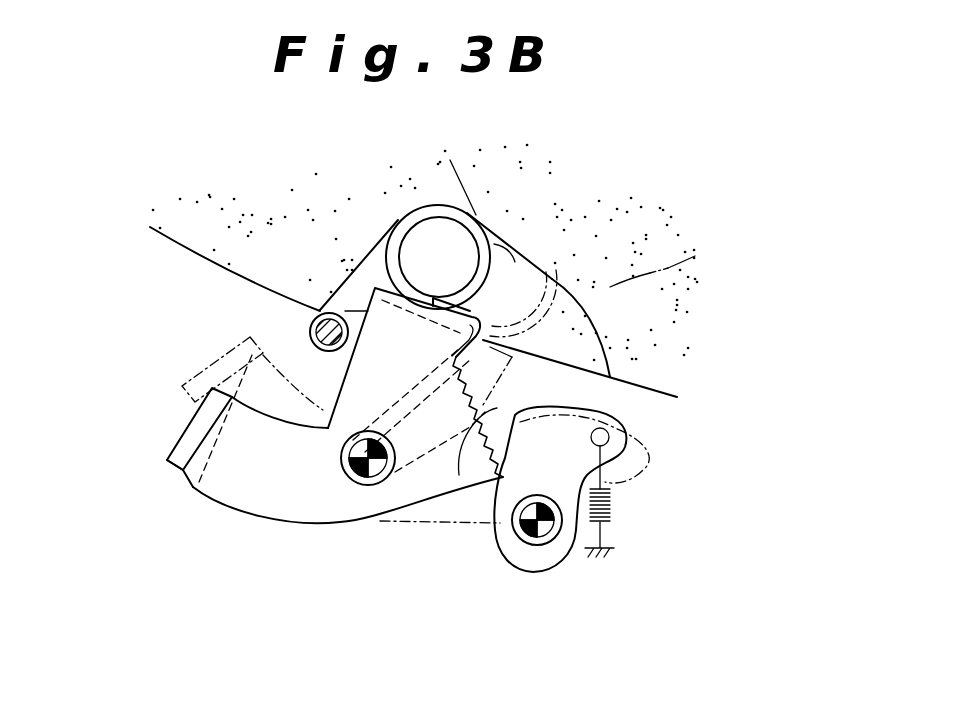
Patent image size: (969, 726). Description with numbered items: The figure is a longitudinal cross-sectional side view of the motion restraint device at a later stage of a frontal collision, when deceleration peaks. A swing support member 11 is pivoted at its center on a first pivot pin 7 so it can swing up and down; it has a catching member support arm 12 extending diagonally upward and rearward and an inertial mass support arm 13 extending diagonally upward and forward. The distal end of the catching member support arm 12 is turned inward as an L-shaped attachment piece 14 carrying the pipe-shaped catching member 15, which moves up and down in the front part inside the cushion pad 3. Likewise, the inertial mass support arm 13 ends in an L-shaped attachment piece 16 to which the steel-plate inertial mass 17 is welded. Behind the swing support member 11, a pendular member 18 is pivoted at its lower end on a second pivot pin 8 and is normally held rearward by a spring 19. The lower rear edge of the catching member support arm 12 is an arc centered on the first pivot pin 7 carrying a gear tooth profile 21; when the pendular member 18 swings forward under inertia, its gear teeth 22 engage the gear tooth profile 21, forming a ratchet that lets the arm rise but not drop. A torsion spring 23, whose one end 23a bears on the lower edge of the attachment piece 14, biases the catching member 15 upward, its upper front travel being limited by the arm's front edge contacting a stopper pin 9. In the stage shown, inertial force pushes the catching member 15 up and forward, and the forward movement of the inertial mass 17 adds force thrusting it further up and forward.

The cushion pad 3 is at (200, 228).
The first pivot pin 7 is at (370, 478).
The second pivot pin 8 is at (538, 535).
The stopper pin 9 is at (310, 324).
The swing support member 11 is at (307, 527).
The catching member support arm 12 is at (403, 358).
The inertial mass support arm 13 is at (243, 477).
The L-shaped attachment piece 14 is at (378, 262).
The catching member 15 is at (417, 243).
The L-shaped attachment piece 16 is at (180, 473).
The inertial mass 17 is at (187, 443).
The pendular member 18 is at (555, 550).
The spring 19 is at (607, 507).
The gear tooth profile 21 is at (459, 475).
The gear teeth 22 is at (568, 425).
The torsion spring 23 is at (405, 478).
The one end of torsion spring 23a is at (533, 273).